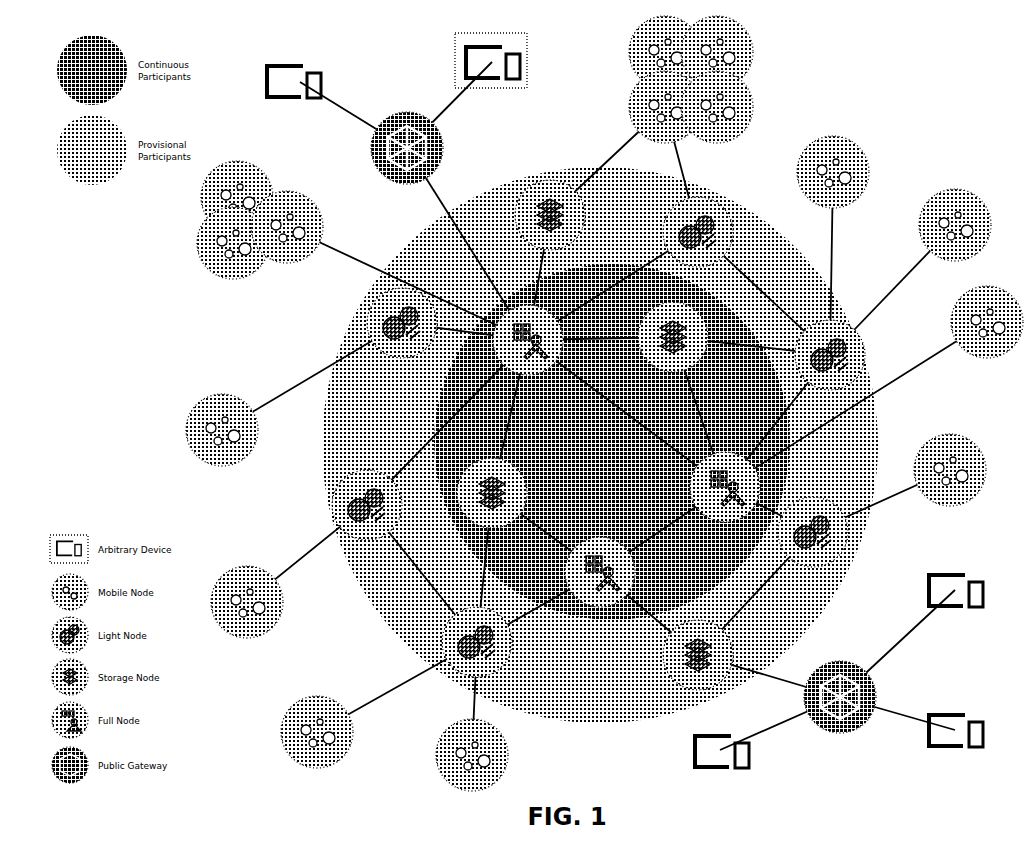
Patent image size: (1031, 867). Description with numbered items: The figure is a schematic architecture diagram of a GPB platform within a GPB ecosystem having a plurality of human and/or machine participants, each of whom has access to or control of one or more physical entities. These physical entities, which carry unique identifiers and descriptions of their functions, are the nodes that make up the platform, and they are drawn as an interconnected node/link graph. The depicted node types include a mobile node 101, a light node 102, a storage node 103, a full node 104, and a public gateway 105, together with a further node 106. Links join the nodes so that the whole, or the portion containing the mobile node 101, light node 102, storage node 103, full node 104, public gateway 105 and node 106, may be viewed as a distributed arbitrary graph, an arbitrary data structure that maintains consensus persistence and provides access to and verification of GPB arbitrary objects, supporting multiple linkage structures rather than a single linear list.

The mobile node 101 is at (216, 392).
The light node 102 is at (365, 311).
The storage node 103 is at (546, 179).
The full node 104 is at (689, 490).
The public gateway 105 is at (370, 150).
The node 106 is at (628, 84).